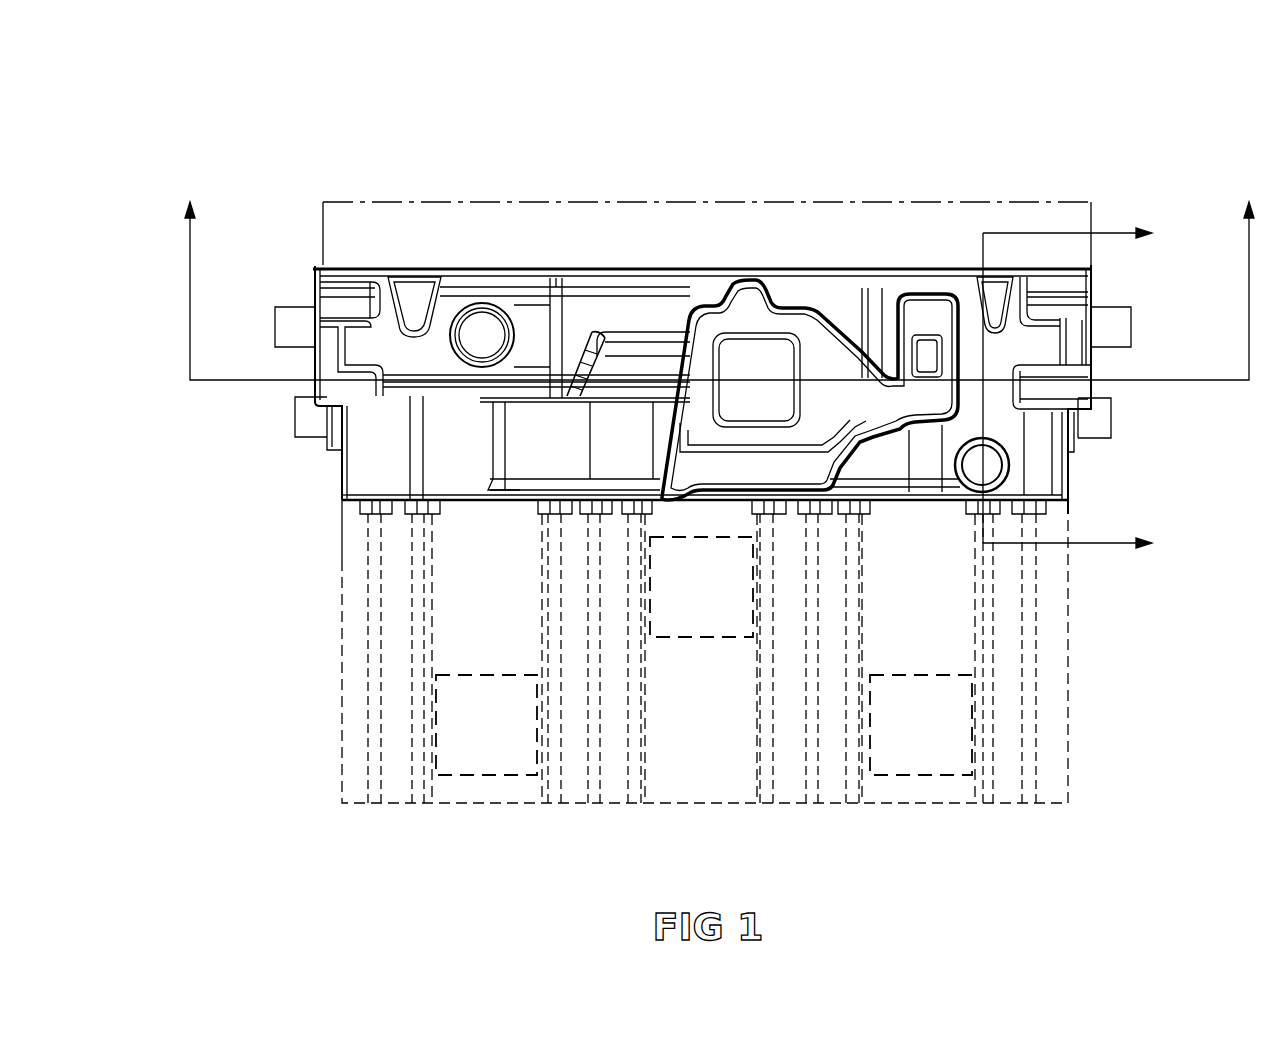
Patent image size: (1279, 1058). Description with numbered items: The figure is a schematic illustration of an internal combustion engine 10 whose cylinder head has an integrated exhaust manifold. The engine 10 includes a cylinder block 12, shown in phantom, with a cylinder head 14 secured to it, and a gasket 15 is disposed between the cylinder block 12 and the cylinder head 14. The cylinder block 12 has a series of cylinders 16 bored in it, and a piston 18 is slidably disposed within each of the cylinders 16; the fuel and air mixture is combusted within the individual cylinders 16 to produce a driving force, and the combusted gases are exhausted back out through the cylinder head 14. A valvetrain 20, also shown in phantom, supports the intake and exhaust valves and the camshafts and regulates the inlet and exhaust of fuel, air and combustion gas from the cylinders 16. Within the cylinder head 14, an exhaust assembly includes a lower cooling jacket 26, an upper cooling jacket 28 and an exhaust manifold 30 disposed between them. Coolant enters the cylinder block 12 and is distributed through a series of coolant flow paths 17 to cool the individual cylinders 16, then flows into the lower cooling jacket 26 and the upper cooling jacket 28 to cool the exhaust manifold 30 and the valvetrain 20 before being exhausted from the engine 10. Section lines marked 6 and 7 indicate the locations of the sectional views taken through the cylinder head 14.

The internal combustion engine 10 is at (896, 154).
The cylinder block 12 is at (1066, 747).
The cylinder head 14 is at (306, 266).
The gasket 15 is at (340, 500).
The cylinders 16 is at (487, 795).
The coolant flow paths 17 is at (413, 590).
The piston 18 is at (460, 685).
The valvetrain 20 is at (596, 218).
The lower cooling jacket 26 is at (1113, 418).
The upper cooling jacket 28 is at (1133, 327).
The exhaust manifold 30 is at (745, 350).
The section line 6- 6 is at (1082, 389).
The section line 7- 7 is at (719, 277).